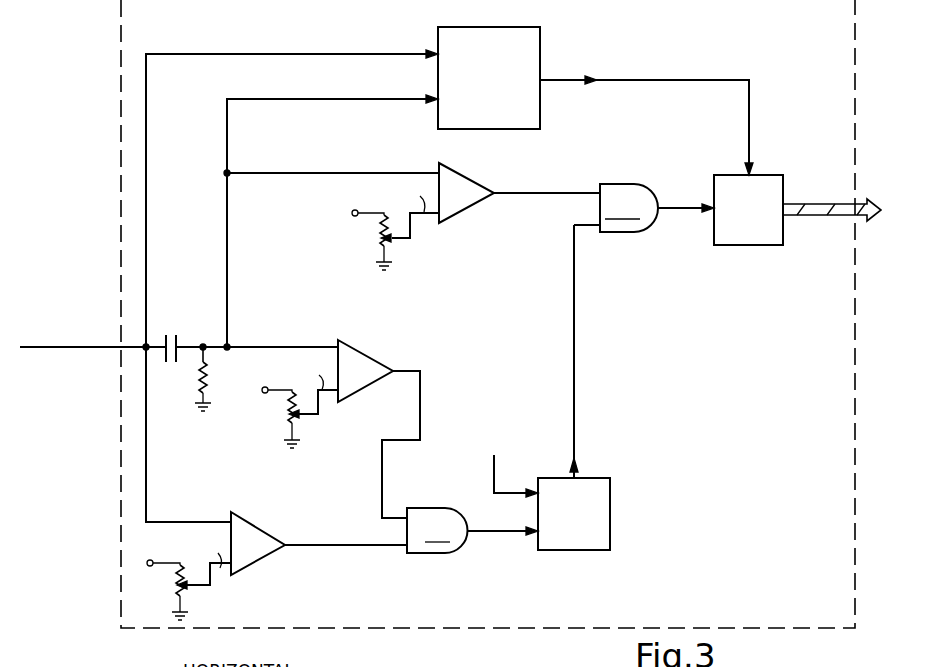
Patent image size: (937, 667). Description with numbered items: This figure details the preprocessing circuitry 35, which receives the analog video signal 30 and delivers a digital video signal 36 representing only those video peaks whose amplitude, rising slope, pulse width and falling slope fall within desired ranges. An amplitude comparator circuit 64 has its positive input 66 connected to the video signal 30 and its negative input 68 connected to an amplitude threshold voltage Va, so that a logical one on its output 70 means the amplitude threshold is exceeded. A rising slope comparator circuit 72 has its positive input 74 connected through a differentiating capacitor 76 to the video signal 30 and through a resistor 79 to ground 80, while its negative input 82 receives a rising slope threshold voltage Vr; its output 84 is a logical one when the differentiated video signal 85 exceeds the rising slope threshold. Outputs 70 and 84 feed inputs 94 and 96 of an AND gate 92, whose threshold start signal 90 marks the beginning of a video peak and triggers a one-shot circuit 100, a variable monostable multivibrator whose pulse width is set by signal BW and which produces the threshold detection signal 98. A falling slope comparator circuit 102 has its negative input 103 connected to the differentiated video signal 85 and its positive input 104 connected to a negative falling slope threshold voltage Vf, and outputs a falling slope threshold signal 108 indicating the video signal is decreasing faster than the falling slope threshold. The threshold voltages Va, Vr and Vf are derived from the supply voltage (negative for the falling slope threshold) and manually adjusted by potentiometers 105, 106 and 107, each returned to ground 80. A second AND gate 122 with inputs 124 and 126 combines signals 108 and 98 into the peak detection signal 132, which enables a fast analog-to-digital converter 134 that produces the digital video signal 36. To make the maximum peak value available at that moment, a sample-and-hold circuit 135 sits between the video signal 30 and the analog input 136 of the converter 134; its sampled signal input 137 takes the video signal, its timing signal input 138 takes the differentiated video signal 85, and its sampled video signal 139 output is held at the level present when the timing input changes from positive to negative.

The video signal 30 is at (94, 346).
The preprocessing circuitry 35 is at (768, 536).
The digital video signal 36 is at (862, 206).
The amplitude comparator circuit 64 is at (264, 532).
The positive input of comparator 64 66 is at (220, 521).
The negative input of comparator 64 68 is at (230, 570).
The output of comparator 64 70 is at (318, 545).
The rising slope comparator circuit 72 is at (368, 352).
The positive input of comparator 72 74 is at (330, 346).
The differentiating capacitor 76 is at (172, 340).
The resistor 79 is at (201, 388).
The ground 80 is at (205, 413).
The negative input of comparator 72 82 is at (324, 408).
The output of comparator 72 84 is at (422, 400).
The differentiated video signal 85 is at (228, 135).
The threshold start signal 90 is at (508, 540).
The AND gate 92 is at (437, 530).
The input of AND gate 92 94 is at (400, 558).
The input of AND gate 92 96 is at (398, 514).
The threshold detection signal 98 is at (576, 444).
The one-shot circuit 100 is at (611, 496).
The falling slope comparator circuit 102 is at (476, 180).
The negative input of comparator 102 103 is at (422, 173).
The positive input of comparator 102 104 is at (426, 226).
The potentiometer 105 is at (176, 585).
The potentiometer 106 is at (286, 412).
The potentiometer 107 is at (380, 237).
The falling slope threshold signal 108 is at (553, 192).
The AND gate 122 is at (629, 208).
The input of AND gate 122 124 is at (590, 207).
The input of AND gate 122 126 is at (590, 250).
The peak detection signal 132 is at (688, 199).
The analog-to-digital converter 134 is at (776, 250).
The sample-and-hold circuit 135 is at (531, 27).
The analog input of converter 136 is at (750, 150).
The sampled signal input 137 is at (410, 53).
The timing signal input 138 is at (410, 98).
The sampled video signal 139 is at (646, 110).